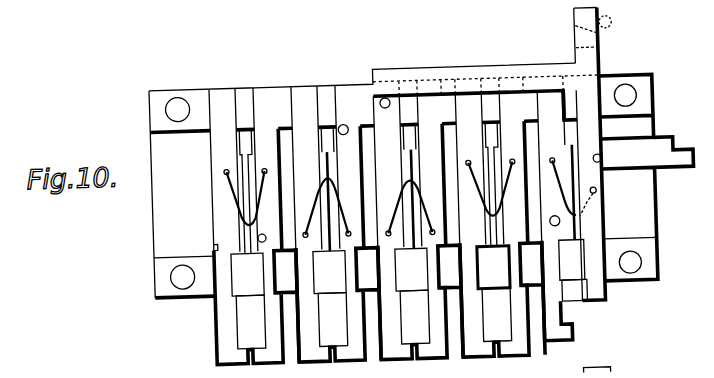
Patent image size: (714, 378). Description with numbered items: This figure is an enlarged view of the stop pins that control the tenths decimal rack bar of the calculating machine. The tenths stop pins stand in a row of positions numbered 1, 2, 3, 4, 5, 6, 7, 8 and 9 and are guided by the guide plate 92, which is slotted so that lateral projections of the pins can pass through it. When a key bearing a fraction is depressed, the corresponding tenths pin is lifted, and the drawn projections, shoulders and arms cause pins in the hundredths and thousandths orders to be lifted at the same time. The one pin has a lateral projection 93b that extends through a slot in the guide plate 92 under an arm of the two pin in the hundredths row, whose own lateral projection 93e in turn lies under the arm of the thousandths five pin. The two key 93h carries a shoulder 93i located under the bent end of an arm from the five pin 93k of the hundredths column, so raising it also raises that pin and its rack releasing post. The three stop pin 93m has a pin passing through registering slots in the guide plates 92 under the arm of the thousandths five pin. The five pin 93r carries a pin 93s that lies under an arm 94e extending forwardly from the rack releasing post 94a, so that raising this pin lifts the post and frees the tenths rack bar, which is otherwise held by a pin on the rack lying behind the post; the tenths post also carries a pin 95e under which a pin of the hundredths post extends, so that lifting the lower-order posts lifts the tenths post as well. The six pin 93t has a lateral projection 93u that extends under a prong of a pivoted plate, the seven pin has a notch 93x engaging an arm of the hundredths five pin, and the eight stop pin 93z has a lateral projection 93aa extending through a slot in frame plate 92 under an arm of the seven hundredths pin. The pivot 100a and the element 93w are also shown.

The "1" tenths decimal stop pin position 1 is at (554, 80).
The "2" tenths decimal stop pin position 2 is at (508, 143).
The "3" tenths decimal stop pin position 3 is at (474, 144).
The "4" tenths decimal stop pin position 4 is at (427, 145).
The "5" tenths decimal stop pin position 5 is at (393, 146).
The "6" tenths decimal stop pin position 6 is at (344, 147).
The "7" tenths decimal stop pin position 7 is at (312, 148).
The "8" tenths decimal stop pin position 8 is at (264, 150).
The "9" tenths decimal stop pin position 9 is at (229, 151).
The guide plate 92 is at (157, 233).
The "8" stop pin 93z is at (252, 235).
The lateral projection 93aa is at (244, 246).
The lateral projection 93u is at (321, 232).
The contact spring 93w is at (343, 118).
The notch 93x is at (325, 181).
The "6" pin 93t is at (343, 196).
The pin 93s is at (385, 117).
The "5" pin 93r is at (408, 234).
The "3" stop pin 93m is at (469, 139).
The "2" key 93h is at (507, 139).
The "5" pin 93k is at (476, 238).
The shoulder 93i is at (497, 186).
The lateral projection 93e is at (567, 210).
The lateral projection 93b is at (558, 230).
The arm 94e is at (533, 95).
The rack releasing post 94a is at (636, 153).
The pivot pin 100a is at (648, 372).
The pin 95e is at (603, 162).